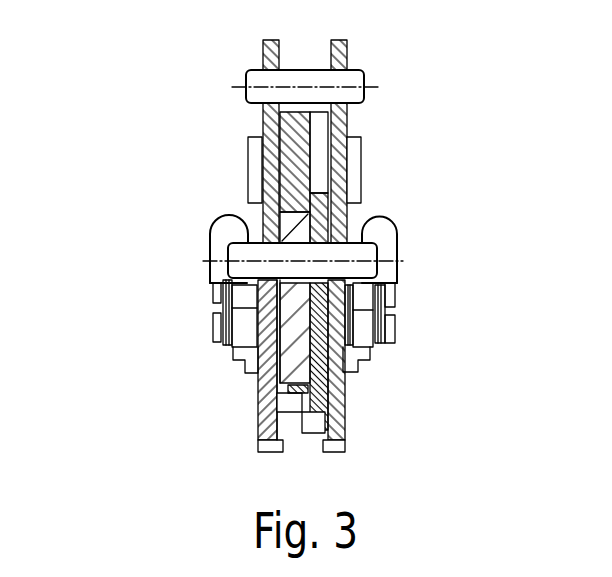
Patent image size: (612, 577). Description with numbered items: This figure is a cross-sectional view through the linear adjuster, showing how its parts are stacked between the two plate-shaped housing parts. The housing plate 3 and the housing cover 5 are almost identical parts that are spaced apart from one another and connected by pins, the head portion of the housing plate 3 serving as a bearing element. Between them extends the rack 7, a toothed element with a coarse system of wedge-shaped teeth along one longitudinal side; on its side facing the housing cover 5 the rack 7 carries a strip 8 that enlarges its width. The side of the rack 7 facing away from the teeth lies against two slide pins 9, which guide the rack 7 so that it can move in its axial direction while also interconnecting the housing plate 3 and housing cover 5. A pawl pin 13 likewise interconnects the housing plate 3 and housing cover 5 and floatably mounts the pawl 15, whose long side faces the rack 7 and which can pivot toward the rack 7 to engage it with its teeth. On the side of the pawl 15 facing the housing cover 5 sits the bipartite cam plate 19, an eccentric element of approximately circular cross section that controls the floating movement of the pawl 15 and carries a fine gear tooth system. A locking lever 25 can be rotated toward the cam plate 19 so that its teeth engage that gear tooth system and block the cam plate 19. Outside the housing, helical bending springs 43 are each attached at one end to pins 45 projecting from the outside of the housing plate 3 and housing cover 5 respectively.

The housing plate 3 is at (265, 52).
The housing cover 5 is at (347, 55).
The rack 7 is at (293, 161).
The strip 8 is at (318, 163).
The slide pins 9 is at (285, 80).
The pawl pin 13 is at (283, 255).
The pawl 15 is at (285, 330).
The cam plate 19 is at (310, 320).
The locking lever 25 is at (313, 388).
The helical bending springs 43 is at (223, 232).
The pins 45 is at (363, 332).